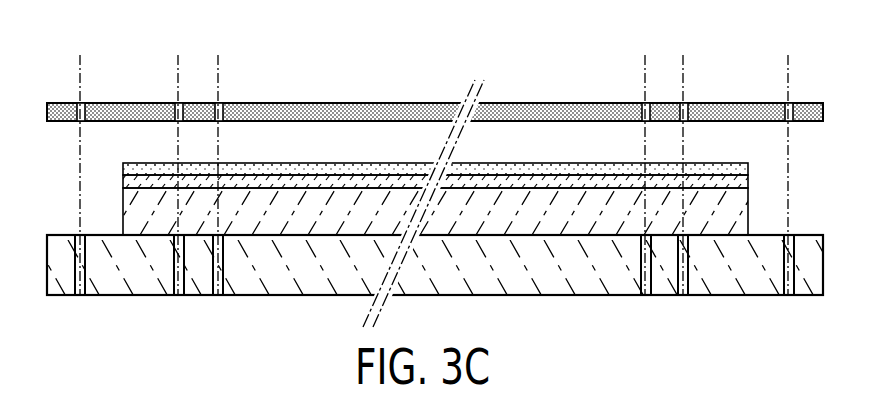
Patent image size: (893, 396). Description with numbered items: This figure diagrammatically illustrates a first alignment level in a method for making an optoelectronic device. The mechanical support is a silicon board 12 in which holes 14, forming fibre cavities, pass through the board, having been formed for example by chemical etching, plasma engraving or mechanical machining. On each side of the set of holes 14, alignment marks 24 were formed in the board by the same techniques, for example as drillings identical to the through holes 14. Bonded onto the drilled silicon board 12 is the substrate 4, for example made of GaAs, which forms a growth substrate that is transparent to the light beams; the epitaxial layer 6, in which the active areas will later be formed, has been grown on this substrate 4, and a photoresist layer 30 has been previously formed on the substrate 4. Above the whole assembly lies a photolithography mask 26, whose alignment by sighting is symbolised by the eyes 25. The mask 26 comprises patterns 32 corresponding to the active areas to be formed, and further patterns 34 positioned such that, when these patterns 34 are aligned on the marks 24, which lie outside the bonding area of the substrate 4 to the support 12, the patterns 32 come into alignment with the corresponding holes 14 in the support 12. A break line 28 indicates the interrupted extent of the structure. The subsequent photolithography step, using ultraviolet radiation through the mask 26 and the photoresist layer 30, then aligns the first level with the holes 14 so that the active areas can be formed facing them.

The substrate 4 is at (748, 205).
The epitaxial layer 6 is at (540, 186).
The silicon board 12 is at (62, 248).
The holes 14 is at (218, 297).
The alignment marks 24 is at (80, 297).
The eyes 25 is at (774, 35).
The photolithography mask 26 is at (505, 105).
The break line 28 is at (443, 98).
The photoresist layer 30 is at (287, 168).
The patterns 32 is at (220, 103).
The patterns 34 is at (78, 120).